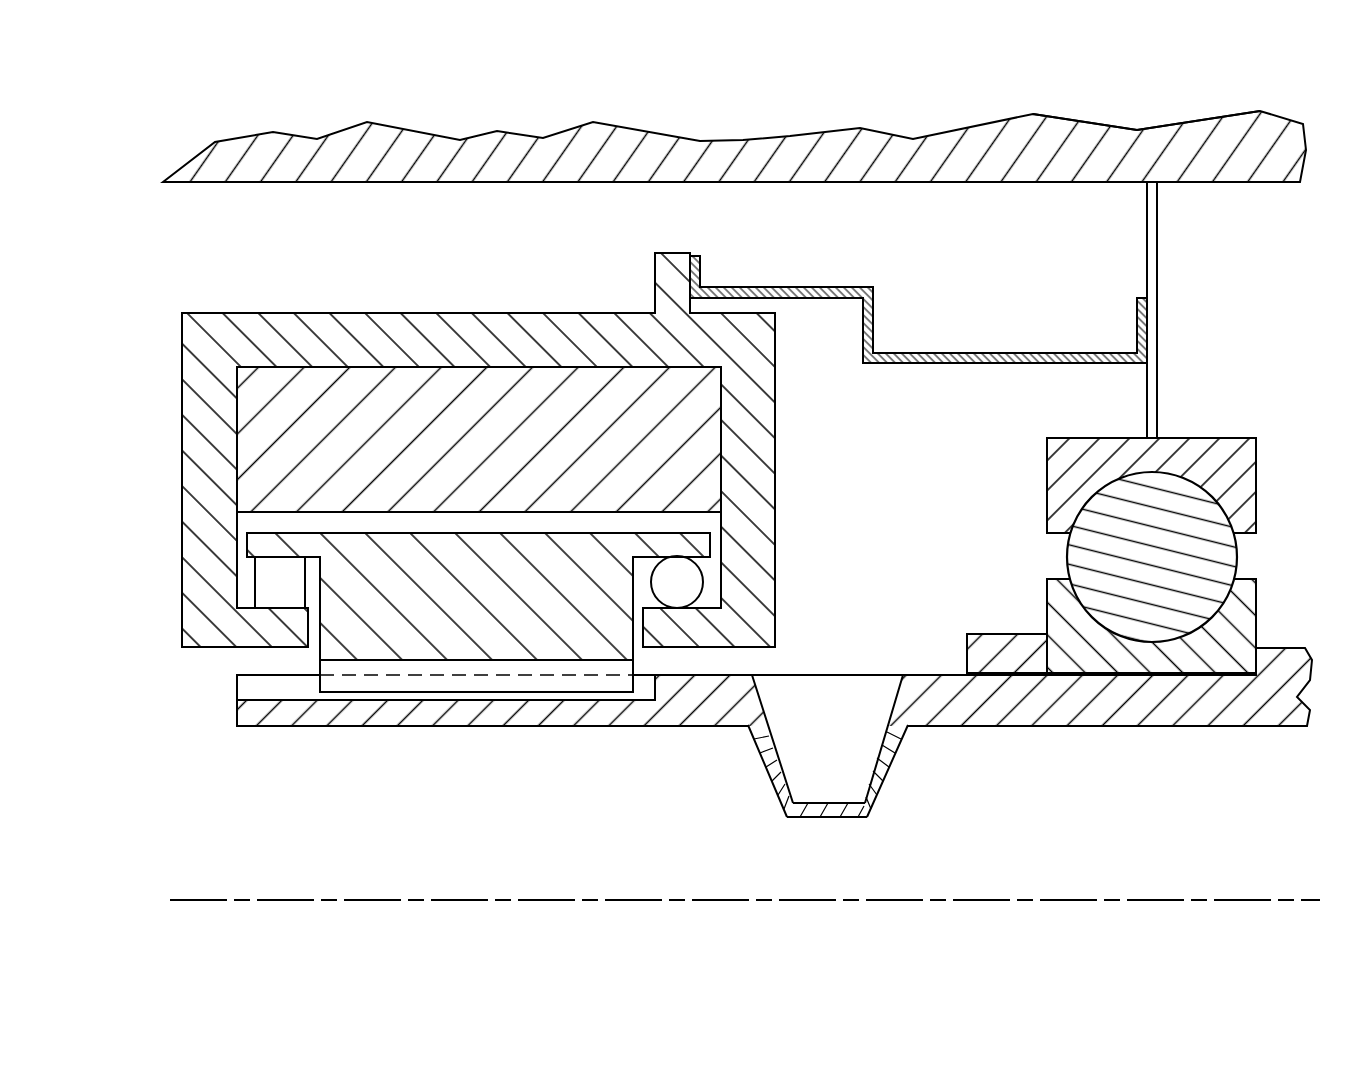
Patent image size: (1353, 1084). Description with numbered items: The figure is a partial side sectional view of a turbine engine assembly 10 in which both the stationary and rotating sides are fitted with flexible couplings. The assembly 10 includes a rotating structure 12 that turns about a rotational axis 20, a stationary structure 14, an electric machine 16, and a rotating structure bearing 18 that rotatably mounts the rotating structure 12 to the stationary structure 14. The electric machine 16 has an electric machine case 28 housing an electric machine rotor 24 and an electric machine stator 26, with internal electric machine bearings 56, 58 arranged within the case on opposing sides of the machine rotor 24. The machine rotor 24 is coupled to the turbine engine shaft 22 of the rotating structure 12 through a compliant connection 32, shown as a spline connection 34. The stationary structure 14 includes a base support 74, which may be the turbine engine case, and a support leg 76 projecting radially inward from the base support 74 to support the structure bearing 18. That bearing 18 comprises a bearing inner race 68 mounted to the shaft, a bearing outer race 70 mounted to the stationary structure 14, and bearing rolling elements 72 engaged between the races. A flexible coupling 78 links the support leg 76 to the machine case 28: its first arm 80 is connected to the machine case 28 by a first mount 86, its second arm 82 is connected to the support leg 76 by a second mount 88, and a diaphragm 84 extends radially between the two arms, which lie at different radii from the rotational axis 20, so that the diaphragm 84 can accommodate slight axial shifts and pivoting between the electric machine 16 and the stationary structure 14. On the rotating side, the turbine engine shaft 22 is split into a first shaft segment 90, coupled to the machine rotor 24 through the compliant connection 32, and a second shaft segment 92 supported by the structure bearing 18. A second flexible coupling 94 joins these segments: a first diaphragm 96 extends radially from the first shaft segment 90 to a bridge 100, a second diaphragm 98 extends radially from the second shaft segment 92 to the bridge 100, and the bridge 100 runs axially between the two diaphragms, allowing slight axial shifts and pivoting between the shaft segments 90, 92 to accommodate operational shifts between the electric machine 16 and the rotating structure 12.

The turbine engine assembly 10 is at (128, 131).
The rotating structure 12 is at (226, 723).
The stationary structure 14 is at (440, 118).
The electric machine 16 is at (160, 298).
The rotating structure bearing 18 is at (1270, 431).
The rotational axis 20 is at (1287, 896).
The turbine engine shaft 22 is at (285, 728).
The electric machine rotor 24 is at (524, 505).
The electric machine stator 26 is at (468, 360).
The electric machine case 28 is at (283, 305).
The compliant connection 32 is at (476, 734).
The spline connection 34 is at (432, 702).
The electric machine bearing 56 is at (242, 578).
The electric machine bearing 58 is at (718, 576).
The bearing inner race 68 is at (1257, 610).
The bearing outer race 70 is at (1257, 490).
The bearing rolling elements 72 is at (1238, 557).
The base support 74 is at (1127, 128).
The support leg 76 is at (1160, 210).
The flexible coupling 78 is at (907, 276).
The first arm 80 is at (786, 286).
The second arm 82 is at (962, 364).
The diaphragm 84 is at (875, 320).
The first mount 86 is at (702, 268).
The second mount 88 is at (1137, 320).
The first shaft segment 90 is at (540, 728).
The second shaft segment 92 is at (1158, 728).
The flexible coupling 94 is at (734, 798).
The first diaphragm 96 is at (755, 750).
The second diaphragm 98 is at (897, 757).
The bridge 100 is at (840, 818).